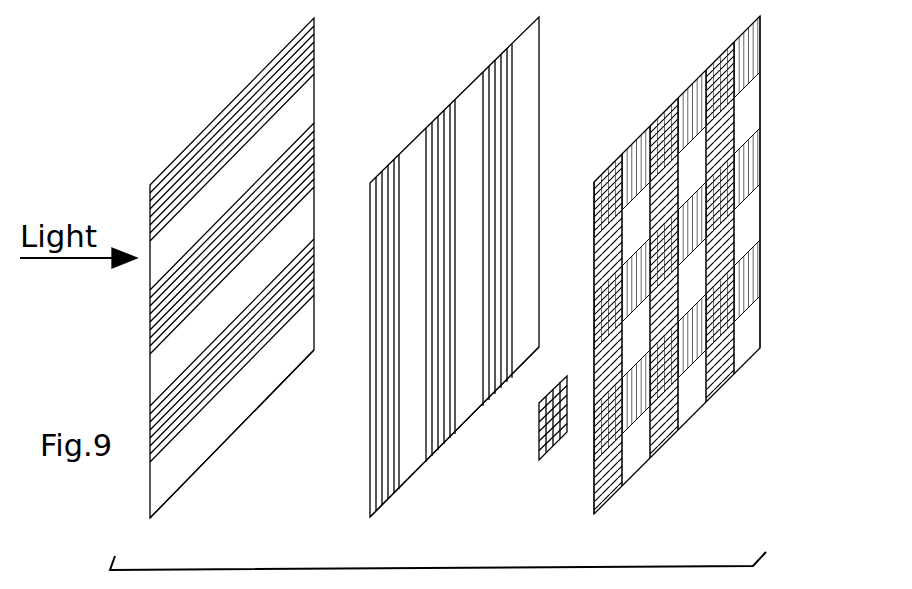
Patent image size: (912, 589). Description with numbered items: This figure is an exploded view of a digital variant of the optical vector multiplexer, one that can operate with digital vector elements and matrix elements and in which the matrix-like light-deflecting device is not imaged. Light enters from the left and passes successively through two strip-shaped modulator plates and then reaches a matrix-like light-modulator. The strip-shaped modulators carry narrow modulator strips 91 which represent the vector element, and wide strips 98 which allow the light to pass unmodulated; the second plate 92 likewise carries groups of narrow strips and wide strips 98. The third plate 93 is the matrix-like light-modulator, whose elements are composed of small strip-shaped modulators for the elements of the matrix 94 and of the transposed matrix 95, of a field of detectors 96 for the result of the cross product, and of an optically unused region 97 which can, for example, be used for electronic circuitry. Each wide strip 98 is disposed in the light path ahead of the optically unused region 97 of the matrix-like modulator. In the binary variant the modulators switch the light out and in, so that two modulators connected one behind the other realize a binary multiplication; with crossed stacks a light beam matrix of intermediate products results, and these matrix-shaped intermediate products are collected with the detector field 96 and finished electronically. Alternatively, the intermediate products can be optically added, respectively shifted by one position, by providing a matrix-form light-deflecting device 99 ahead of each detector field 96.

The narrow modulator strips 91 is at (248, 200).
The second grating plate 92 is at (458, 202).
The patterned mask plate 93 is at (715, 257).
The matrix 94 is at (745, 60).
The transposed matrix 95 is at (733, 345).
The field of detectors 96 is at (708, 395).
The optically unused region 97 is at (750, 217).
The wide strips 98 is at (167, 463).
The matrix-form light-deflecting device 99 is at (539, 460).